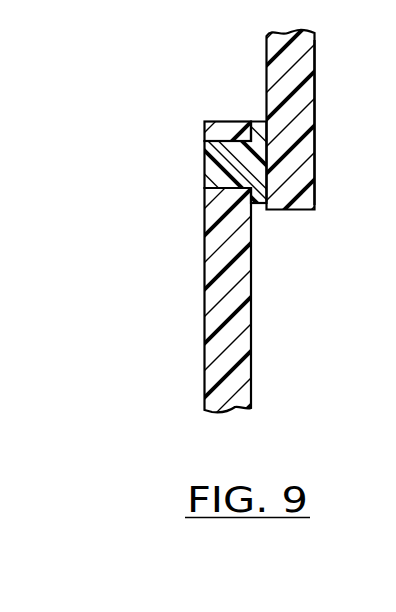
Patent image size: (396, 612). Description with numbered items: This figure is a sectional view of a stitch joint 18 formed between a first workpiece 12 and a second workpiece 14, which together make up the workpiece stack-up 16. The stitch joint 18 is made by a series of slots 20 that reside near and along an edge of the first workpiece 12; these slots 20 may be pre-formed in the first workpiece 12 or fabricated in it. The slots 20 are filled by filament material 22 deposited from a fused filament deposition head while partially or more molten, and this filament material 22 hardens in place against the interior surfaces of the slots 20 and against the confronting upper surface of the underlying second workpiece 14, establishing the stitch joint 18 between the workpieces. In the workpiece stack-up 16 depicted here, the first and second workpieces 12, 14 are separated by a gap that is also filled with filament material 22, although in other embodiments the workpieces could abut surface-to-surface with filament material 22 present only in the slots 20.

The first workpiece 12 is at (217, 303).
The second workpiece 14 is at (307, 58).
The workpiece stack-up 16 is at (325, 183).
The stitch joint 18 is at (259, 211).
The slots 20 is at (215, 149).
The filament material 22 is at (218, 181).